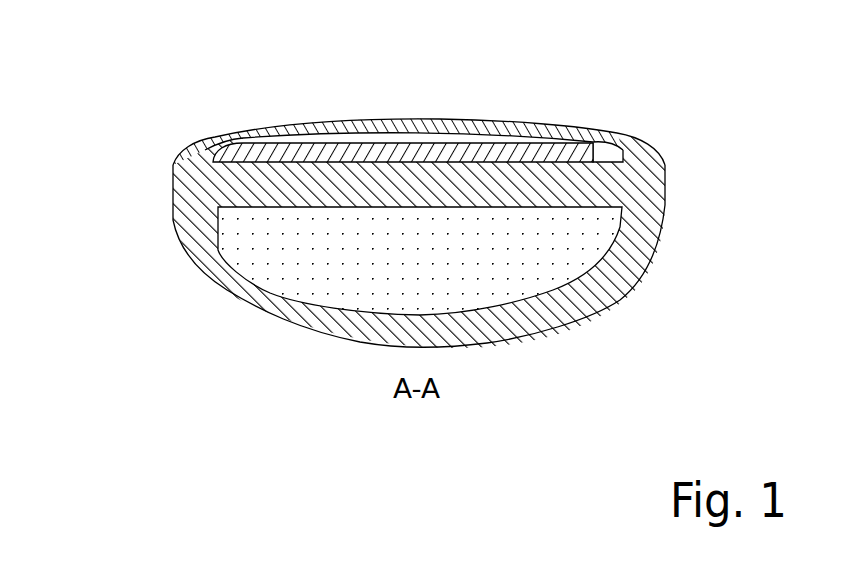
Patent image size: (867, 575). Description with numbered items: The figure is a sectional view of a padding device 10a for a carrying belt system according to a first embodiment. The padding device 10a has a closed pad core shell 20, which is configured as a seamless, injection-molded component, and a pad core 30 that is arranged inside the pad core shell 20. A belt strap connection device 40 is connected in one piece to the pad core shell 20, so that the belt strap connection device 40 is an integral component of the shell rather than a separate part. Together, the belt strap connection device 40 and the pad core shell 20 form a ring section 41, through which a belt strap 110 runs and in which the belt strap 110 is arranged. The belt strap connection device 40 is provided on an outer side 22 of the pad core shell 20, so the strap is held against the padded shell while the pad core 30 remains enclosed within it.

The padding device 10a is at (405, 196).
The pad core shell 20 is at (466, 235).
The outer side 22 is at (232, 150).
The pad core 30 is at (590, 240).
The belt strap connection device 40 is at (538, 104).
The ring section 41 is at (638, 125).
The belt strap 110 is at (433, 146).